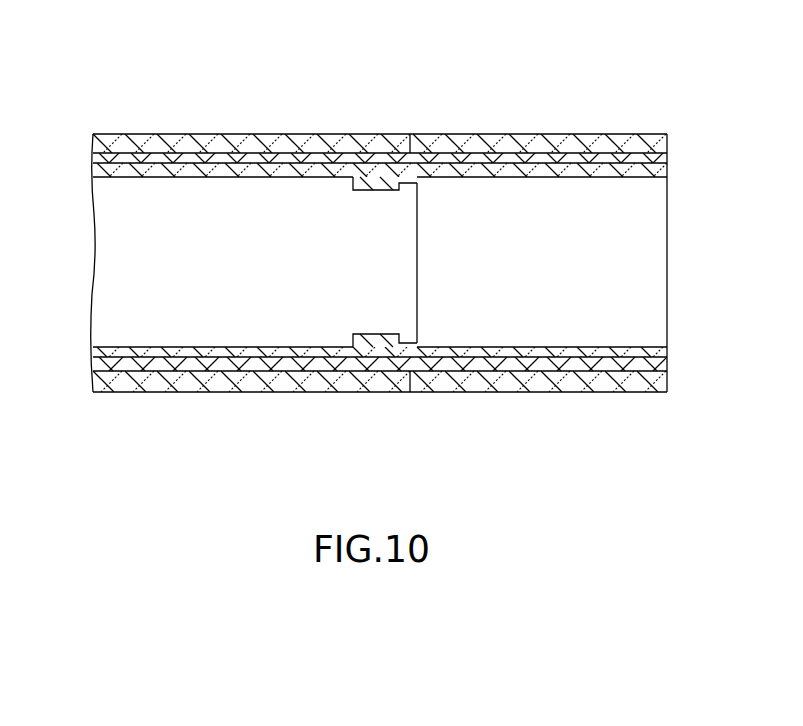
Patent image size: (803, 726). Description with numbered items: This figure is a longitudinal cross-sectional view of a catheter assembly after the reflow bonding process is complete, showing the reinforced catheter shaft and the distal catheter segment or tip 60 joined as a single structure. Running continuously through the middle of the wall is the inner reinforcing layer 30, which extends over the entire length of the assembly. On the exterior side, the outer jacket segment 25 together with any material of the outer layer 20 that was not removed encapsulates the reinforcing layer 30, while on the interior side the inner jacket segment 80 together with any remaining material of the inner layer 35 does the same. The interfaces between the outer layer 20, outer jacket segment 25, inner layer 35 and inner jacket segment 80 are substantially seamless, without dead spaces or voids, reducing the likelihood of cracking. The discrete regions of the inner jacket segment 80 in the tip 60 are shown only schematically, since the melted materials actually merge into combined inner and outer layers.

The catheter segment or tip 60 is at (302, 72).
The outer wall or layer 20 is at (668, 136).
The outer jacket segment 25 is at (232, 147).
The inner reinforcing layer 30 is at (93, 160).
The inner wall or layer 35 is at (575, 168).
The inner jacket segment 80 is at (182, 178).